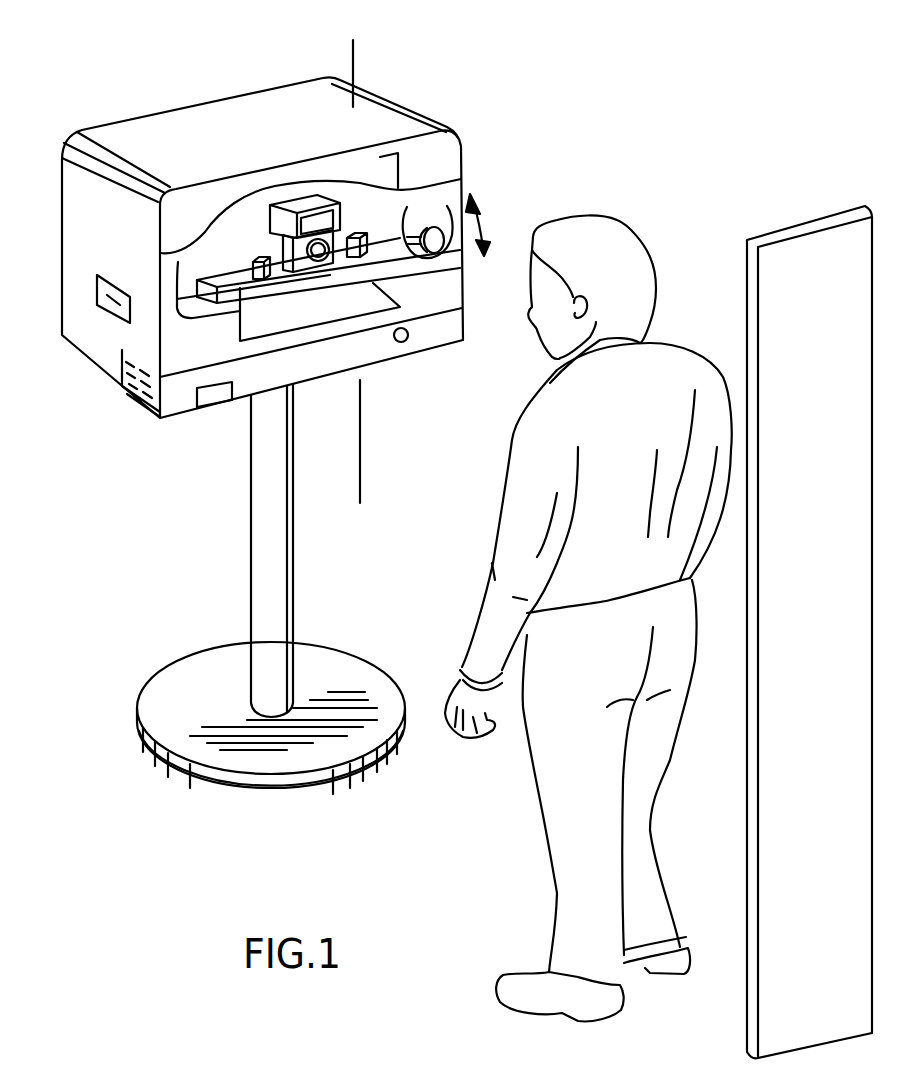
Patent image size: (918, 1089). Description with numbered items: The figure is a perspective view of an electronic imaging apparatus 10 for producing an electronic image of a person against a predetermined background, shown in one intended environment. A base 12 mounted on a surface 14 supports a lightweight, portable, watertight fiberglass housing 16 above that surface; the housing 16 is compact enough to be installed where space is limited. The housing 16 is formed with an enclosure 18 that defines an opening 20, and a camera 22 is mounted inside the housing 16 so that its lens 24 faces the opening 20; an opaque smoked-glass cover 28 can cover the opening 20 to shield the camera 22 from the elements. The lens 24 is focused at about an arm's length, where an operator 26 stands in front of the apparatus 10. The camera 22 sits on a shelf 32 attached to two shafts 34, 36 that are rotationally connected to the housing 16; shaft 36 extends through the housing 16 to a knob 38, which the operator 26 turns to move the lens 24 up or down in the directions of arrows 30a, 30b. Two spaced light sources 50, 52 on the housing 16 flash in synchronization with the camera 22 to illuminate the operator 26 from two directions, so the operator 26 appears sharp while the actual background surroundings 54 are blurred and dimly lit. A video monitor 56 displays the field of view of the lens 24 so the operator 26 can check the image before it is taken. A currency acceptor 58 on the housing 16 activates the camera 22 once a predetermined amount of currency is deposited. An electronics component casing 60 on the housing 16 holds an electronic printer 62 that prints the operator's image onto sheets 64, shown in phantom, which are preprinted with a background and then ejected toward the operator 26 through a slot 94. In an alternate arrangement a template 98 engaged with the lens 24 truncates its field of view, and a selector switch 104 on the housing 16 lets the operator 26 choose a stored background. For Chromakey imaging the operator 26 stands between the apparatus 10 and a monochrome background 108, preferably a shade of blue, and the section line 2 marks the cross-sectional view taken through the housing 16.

The section line 2 is at (366, 66).
The electronic imaging apparatus 10 is at (122, 413).
The base 12 is at (260, 568).
The surface 14 is at (197, 668).
The housing 16 is at (103, 128).
The enclosure 18 is at (259, 218).
The opening 20 is at (324, 260).
The camera 22 is at (250, 214).
The lens 24 is at (322, 260).
The operator 26 is at (660, 343).
The smoked-glass cover 28 is at (383, 163).
The arrow 30a is at (477, 200).
The arrow 30b is at (484, 256).
The shelf 32 is at (167, 257).
The shaft 34 is at (198, 298).
The shaft 36 is at (412, 238).
The knob 38 is at (437, 228).
The light source 50 is at (252, 260).
The light source 52 is at (357, 235).
The background surroundings 54 is at (740, 667).
The video monitor 56 is at (311, 198).
The currency acceptor 58 is at (97, 285).
The electronics component casing 60 is at (180, 403).
The electronic printer 62 is at (148, 413).
The sheets 64 is at (130, 390).
The slot 94 is at (222, 393).
The template 98 is at (320, 260).
The selector switch 104 is at (407, 338).
The monochrome background 108 is at (790, 230).